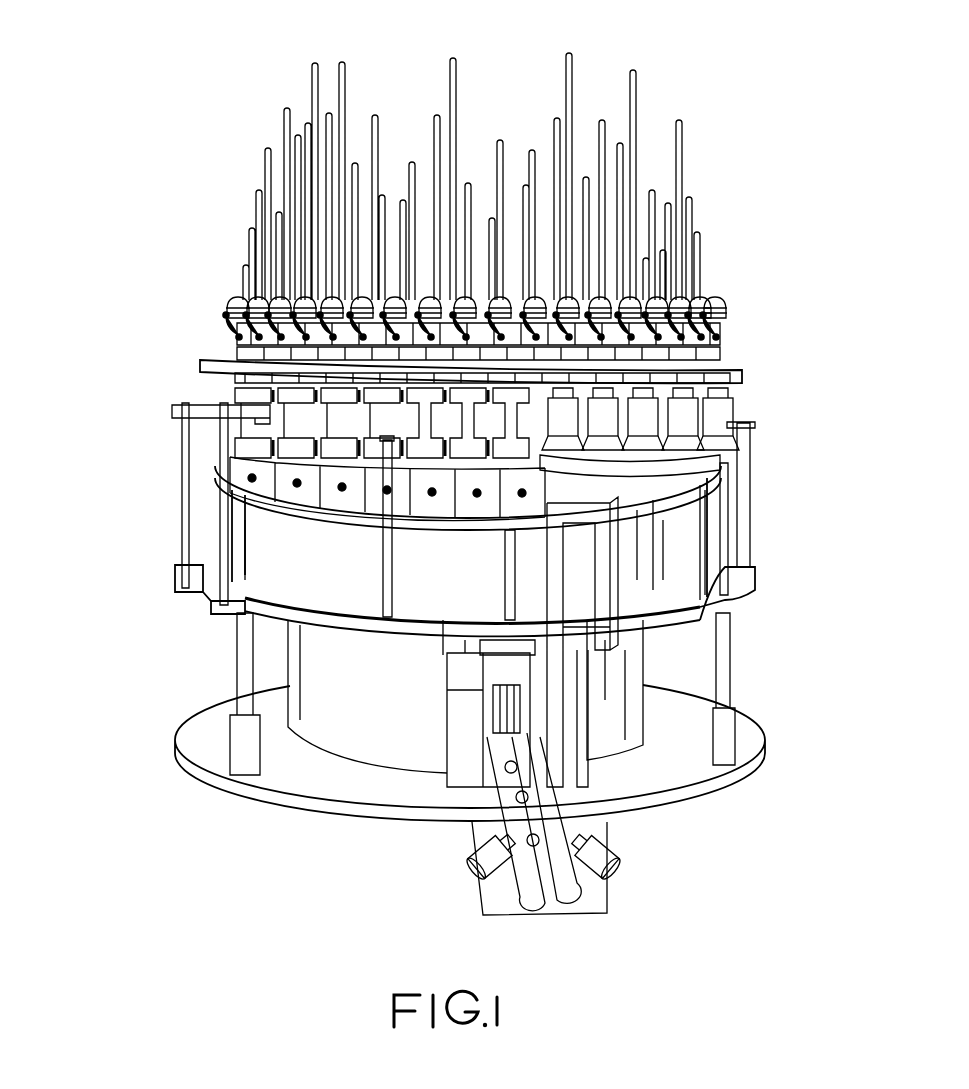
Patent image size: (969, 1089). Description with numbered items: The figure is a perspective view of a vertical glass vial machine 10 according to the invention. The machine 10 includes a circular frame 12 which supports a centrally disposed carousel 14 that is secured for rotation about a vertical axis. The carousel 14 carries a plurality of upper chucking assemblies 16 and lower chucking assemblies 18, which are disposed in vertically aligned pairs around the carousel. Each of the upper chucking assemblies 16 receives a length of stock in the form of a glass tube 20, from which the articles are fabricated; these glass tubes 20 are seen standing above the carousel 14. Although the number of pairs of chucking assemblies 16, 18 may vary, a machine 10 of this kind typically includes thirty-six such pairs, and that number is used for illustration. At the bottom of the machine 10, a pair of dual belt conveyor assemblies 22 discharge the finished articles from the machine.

The vertical vial machine 10 is at (258, 95).
The circular frame 12 is at (732, 647).
The carousel 14 is at (707, 323).
The upper chucking assemblies 16 is at (322, 388).
The lower chucking assemblies 18 is at (237, 470).
The glass tubes 20 is at (683, 147).
The dual belt conveyor assemblies 22 is at (620, 857).